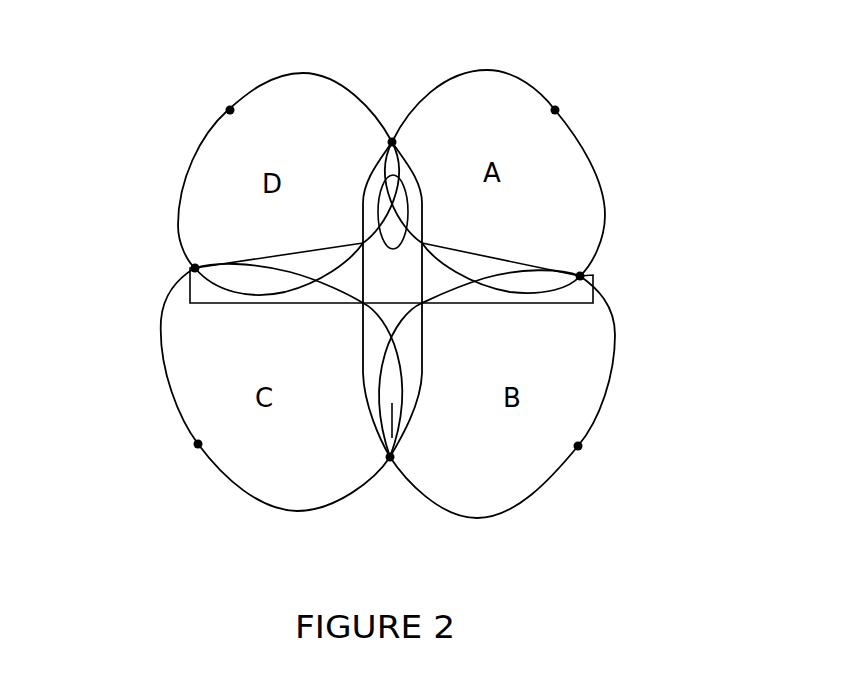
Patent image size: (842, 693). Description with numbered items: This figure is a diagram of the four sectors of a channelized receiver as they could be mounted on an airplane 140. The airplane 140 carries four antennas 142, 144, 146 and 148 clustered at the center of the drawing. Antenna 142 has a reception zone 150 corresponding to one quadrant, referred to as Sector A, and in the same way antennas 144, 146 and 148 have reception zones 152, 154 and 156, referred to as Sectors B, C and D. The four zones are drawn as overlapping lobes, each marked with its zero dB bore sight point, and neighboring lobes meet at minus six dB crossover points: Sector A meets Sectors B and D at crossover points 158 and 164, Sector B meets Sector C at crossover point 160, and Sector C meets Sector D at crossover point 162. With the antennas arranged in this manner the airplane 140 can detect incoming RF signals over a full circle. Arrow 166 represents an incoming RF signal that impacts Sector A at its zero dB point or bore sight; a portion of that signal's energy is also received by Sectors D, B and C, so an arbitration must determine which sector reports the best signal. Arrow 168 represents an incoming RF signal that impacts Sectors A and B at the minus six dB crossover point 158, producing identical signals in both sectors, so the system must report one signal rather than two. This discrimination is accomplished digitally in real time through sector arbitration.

The airplane 140 is at (378, 168).
The antenna 142 is at (422, 243).
The antenna 144 is at (424, 306).
The antenna 146 is at (362, 306).
The antenna 148 is at (363, 243).
The reception zone 150 is at (543, 88).
The reception zone 152 is at (597, 412).
The reception zone 154 is at (247, 500).
The reception zone 156 is at (186, 175).
The −6 dB crossover point 158 is at (582, 275).
The −6 dB crossover point 160 is at (391, 462).
The −6 dB crossover point 162 is at (195, 268).
The −6 dB crossover point 164 is at (391, 140).
The arrow 166 is at (638, 123).
The arrow 168 is at (655, 277).